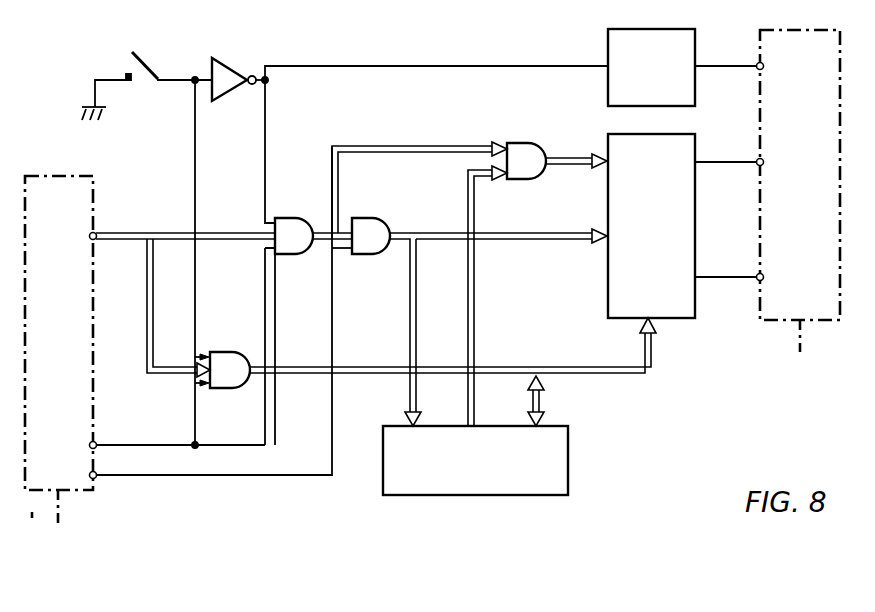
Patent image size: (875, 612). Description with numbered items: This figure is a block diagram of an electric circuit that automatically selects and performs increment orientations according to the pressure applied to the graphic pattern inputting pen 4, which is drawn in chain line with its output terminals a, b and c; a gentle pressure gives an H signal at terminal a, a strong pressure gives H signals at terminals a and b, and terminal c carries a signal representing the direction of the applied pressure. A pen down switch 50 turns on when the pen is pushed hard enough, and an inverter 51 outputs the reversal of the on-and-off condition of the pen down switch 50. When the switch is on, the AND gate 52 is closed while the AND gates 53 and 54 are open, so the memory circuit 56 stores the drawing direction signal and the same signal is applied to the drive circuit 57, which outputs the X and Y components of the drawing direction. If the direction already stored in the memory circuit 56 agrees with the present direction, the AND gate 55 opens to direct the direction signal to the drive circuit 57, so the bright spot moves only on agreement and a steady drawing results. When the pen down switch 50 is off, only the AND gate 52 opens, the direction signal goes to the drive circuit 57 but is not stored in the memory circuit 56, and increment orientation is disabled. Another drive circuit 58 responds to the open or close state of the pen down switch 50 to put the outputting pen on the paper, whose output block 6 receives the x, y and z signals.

The graphic pattern inputting pen 4 is at (78, 177).
The output terminal block 6 is at (820, 32).
The pen down switch 50 is at (150, 62).
The inverter 51 is at (228, 66).
The AND gate 52 is at (228, 352).
The AND gate 53 is at (290, 218).
The AND gate 54 is at (372, 218).
The AND gate 55 is at (532, 144).
The memory circuit 56 is at (570, 442).
The drive circuit 57 is at (672, 135).
The drive circuit 58 is at (672, 31).